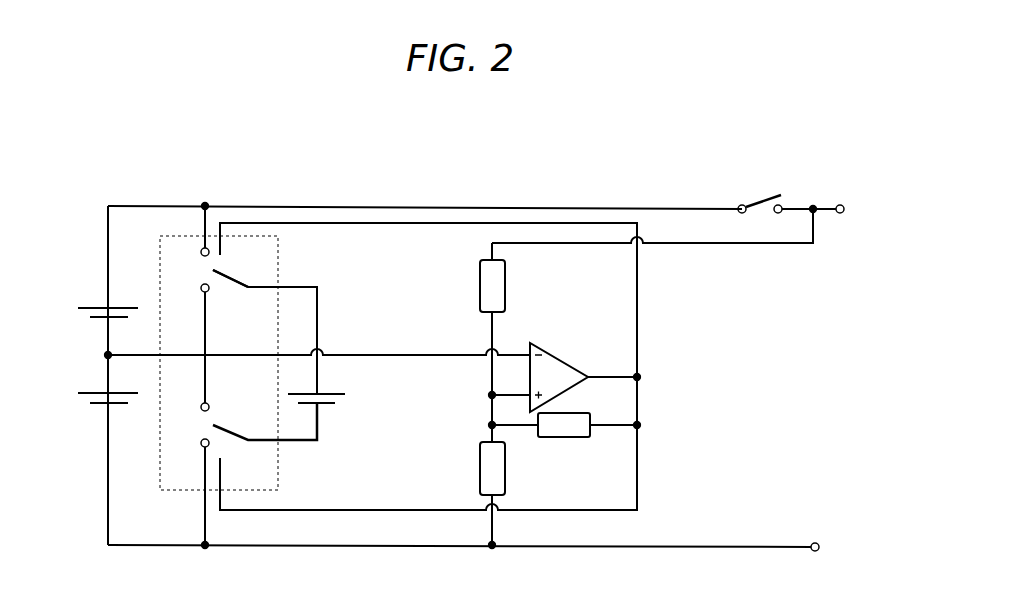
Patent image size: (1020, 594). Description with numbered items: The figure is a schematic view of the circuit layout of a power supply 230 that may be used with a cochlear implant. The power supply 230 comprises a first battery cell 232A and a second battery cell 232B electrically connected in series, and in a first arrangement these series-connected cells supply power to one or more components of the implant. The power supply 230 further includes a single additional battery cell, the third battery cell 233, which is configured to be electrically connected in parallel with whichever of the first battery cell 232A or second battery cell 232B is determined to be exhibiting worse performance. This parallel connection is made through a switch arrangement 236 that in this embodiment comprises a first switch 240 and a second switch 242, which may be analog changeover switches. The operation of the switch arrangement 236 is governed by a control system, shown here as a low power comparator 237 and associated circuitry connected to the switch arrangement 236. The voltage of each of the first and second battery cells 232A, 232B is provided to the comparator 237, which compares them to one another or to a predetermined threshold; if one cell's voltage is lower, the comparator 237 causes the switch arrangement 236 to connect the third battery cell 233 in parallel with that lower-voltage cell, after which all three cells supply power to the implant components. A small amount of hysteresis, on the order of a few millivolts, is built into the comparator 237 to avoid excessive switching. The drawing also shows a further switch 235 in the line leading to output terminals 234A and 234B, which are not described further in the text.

The power supply 230 is at (232, 132).
The first battery cell 232A is at (90, 308).
The second battery cell 232B is at (90, 393).
The third battery cell 233 is at (325, 405).
The first output terminal 234A is at (844, 205).
The second output terminal 234B is at (819, 542).
The switch 235 is at (748, 200).
The switch arrangement 236 is at (279, 262).
The low power comparator 237 is at (565, 355).
The first switch 240 is at (232, 291).
The second switch 242 is at (232, 426).